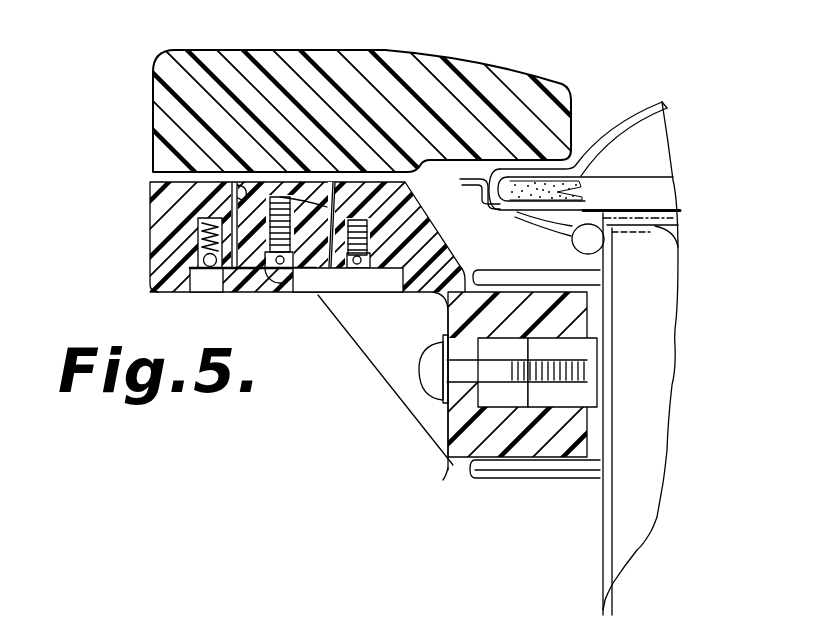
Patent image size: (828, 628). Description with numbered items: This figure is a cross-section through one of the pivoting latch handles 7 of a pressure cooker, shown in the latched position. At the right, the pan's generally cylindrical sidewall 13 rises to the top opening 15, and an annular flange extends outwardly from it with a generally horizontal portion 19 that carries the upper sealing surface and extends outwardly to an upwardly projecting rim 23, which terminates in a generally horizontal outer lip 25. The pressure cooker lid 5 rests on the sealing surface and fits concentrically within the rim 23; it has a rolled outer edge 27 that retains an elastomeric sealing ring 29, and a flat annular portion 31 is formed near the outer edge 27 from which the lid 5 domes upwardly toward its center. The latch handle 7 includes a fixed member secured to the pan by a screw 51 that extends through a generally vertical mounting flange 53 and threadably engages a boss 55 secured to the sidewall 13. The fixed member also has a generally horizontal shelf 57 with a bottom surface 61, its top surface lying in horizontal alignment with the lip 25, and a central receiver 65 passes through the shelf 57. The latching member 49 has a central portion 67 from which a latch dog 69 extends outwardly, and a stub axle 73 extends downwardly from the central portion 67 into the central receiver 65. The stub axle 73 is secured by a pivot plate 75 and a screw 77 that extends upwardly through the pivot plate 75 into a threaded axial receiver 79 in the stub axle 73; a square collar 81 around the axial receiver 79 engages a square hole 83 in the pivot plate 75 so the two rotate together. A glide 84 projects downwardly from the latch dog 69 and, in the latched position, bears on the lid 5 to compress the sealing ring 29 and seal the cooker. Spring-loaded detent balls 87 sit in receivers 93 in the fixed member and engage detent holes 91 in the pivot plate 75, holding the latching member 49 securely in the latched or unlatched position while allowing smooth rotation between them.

The pressure cooker lid 5 is at (641, 110).
The pivoting latch handle 7 is at (274, 432).
The sidewall 13 is at (601, 555).
The top opening 15 is at (679, 247).
The horizontal portion 19 is at (603, 247).
The upwardly projecting rim 23 is at (483, 205).
The horizontal outer lip 25 is at (462, 183).
The rolled outer edge 27 is at (553, 227).
The elastomeric sealing ring 29 is at (652, 175).
The flat annular portion 31 is at (513, 165).
The latching member 49 is at (150, 70).
The screw 51 is at (396, 392).
The mounting flange 53 is at (448, 470).
The boss 55 is at (603, 322).
The shelf 57 is at (150, 243).
The bottom surface 61 is at (168, 292).
The central receiver 65 is at (199, 226).
The central portion 67 is at (461, 617).
The latch dog 69 is at (505, 73).
The stub axle 73 is at (414, 185).
The pivot plate 75 is at (215, 270).
The screw 77 is at (300, 292).
The threaded axial receiver 79 is at (262, 273).
The square collar 81 is at (273, 265).
The square hole 83 is at (291, 270).
The glide 84 is at (596, 145).
The detent ball 87 is at (350, 269).
The detent hole 91 is at (368, 284).
The receiver 93 is at (420, 210).